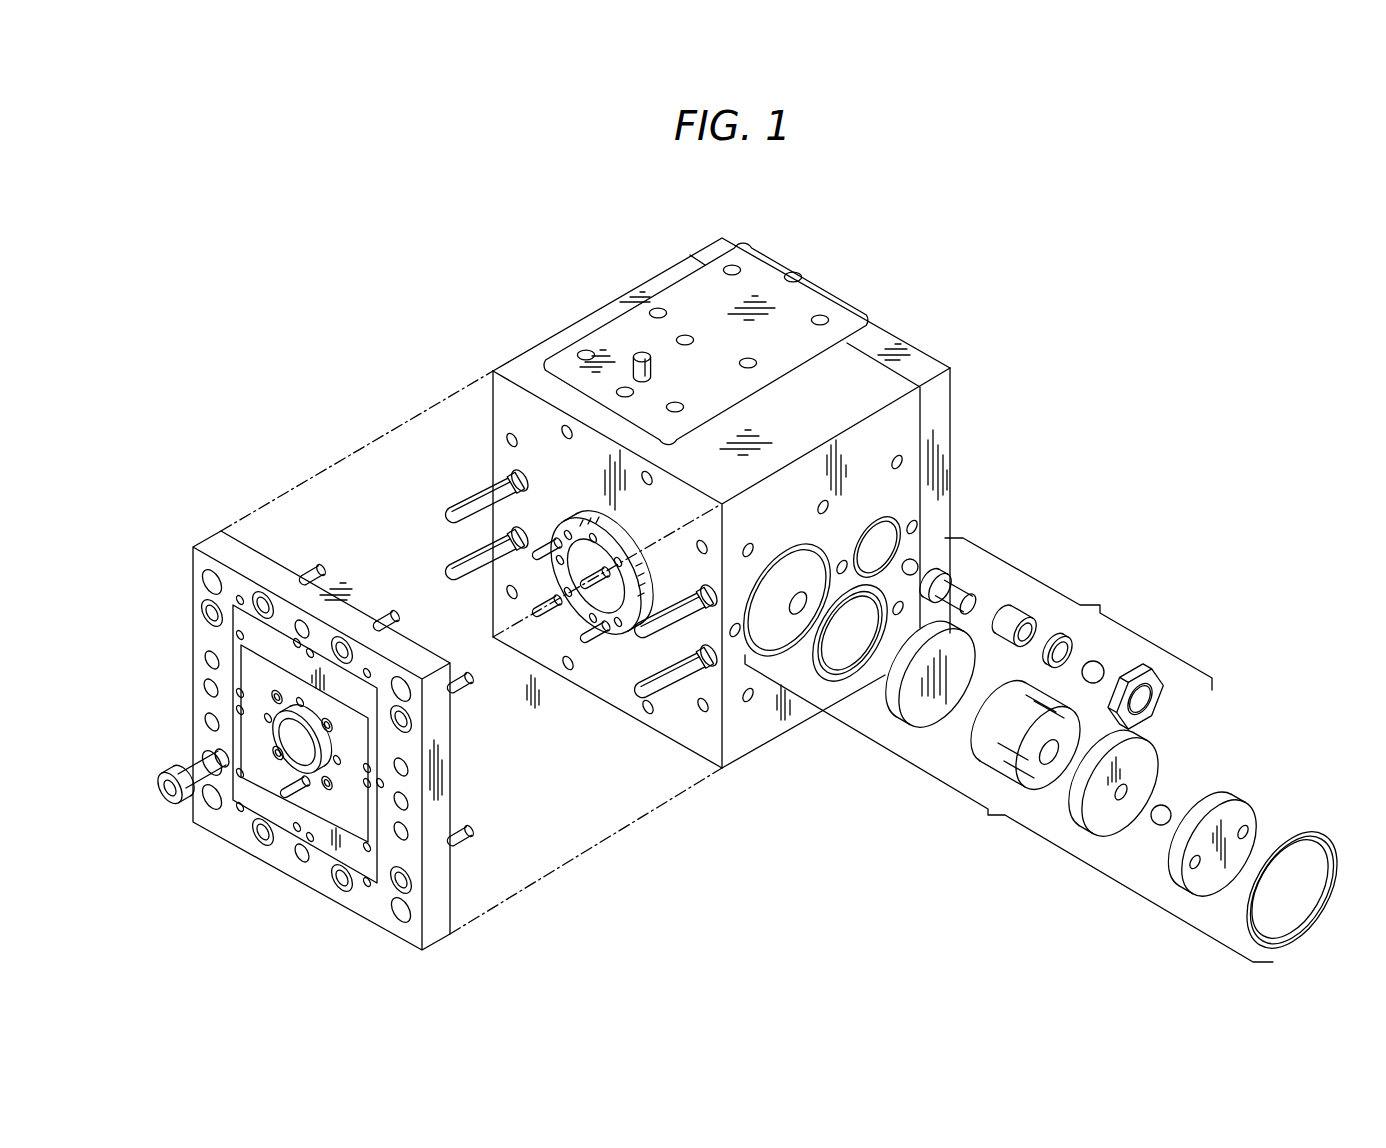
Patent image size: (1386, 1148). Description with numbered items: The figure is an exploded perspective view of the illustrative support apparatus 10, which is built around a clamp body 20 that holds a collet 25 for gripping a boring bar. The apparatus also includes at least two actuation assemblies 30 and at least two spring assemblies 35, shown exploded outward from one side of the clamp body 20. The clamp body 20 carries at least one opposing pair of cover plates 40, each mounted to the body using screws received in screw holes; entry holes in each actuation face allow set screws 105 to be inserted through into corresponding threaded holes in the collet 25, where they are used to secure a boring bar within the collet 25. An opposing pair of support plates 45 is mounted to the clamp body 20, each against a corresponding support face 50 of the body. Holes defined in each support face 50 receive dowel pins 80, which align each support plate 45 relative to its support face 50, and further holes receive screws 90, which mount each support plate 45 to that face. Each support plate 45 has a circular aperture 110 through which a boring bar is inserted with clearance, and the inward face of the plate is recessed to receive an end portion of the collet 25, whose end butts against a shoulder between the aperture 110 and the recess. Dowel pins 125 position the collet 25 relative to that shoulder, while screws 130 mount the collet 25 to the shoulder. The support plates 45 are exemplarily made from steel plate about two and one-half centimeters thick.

The support apparatus 10 is at (712, 877).
The clamp body 20 is at (608, 302).
The collet 25 is at (602, 528).
The actuation assemblies 30 is at (1050, 787).
The spring assemblies 35 is at (1066, 633).
The cover plates 40 is at (774, 280).
The support plates 45 is at (925, 353).
The support face 50 is at (617, 695).
The dowel pins 80 is at (462, 500).
The screws 90 is at (165, 800).
The set screws 105 is at (650, 367).
The circular aperture 110 is at (314, 723).
The dowel pins 125 is at (535, 548).
The screws 130 is at (283, 787).